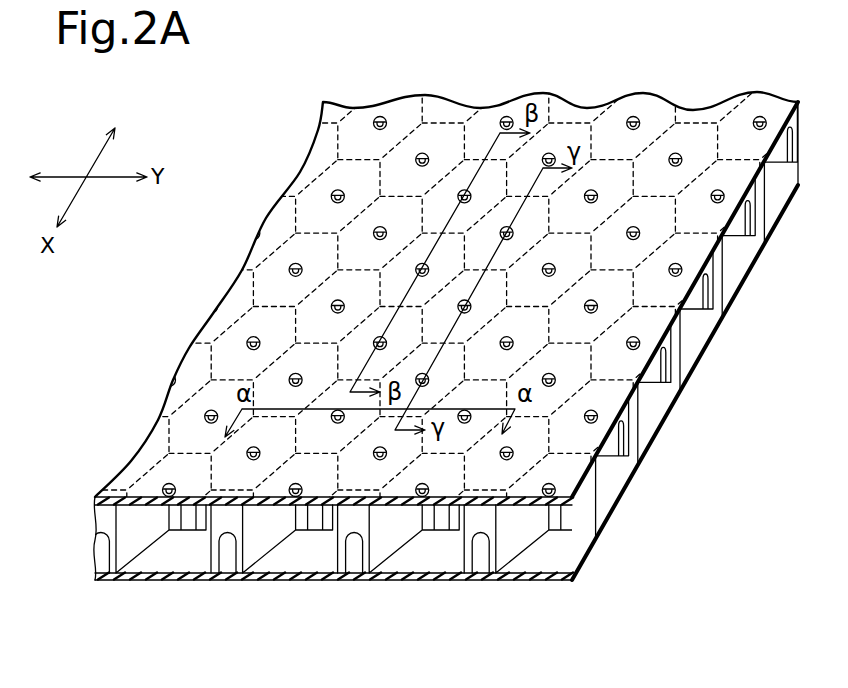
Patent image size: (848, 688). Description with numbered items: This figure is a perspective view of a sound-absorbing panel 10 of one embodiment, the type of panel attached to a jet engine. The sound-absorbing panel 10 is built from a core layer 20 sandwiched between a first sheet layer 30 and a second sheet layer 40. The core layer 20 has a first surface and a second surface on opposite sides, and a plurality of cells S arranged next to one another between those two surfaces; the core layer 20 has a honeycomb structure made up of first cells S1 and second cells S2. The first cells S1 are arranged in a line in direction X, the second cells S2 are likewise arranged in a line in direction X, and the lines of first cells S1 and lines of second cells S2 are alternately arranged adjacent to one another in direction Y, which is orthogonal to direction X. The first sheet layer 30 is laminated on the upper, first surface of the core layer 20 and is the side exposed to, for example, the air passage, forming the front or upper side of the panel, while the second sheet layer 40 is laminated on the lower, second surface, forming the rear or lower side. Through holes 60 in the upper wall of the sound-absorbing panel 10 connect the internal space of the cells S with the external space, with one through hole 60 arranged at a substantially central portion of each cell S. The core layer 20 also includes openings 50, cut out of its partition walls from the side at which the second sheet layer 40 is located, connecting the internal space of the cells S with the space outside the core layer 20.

The sound-absorbing panel 10 is at (464, 343).
The core layer 20 is at (441, 369).
The first sheet layer 30 is at (465, 307).
The second sheet layer 40 is at (552, 572).
The opening 50 is at (313, 519).
The through hole 60 is at (251, 351).
The cell S is at (248, 112).
The first cell S1 is at (337, 158).
The second cell S2 is at (360, 247).